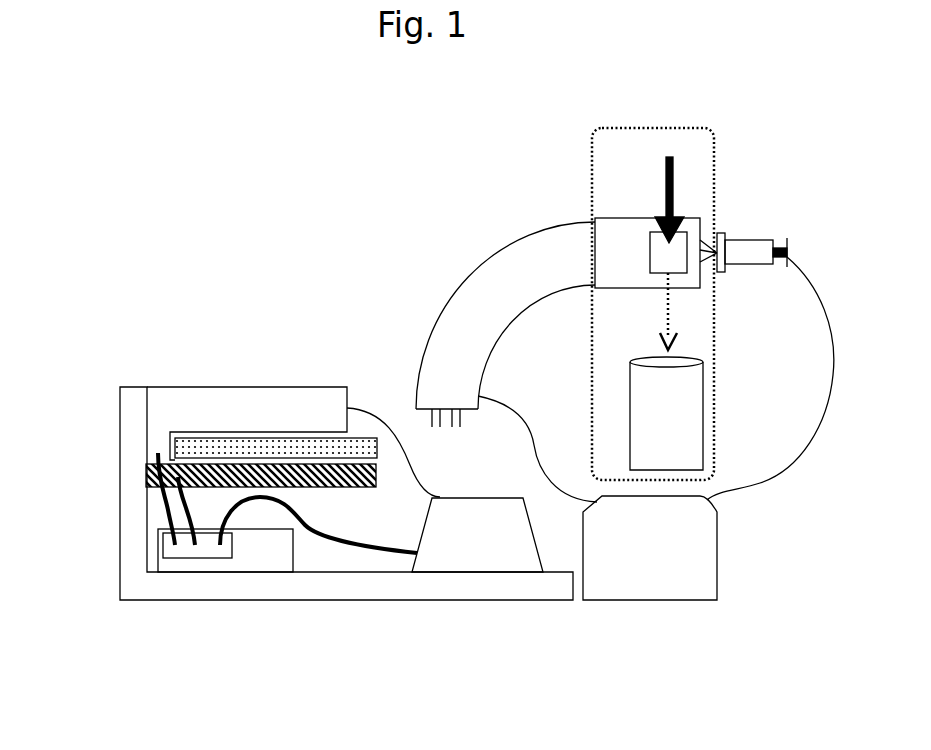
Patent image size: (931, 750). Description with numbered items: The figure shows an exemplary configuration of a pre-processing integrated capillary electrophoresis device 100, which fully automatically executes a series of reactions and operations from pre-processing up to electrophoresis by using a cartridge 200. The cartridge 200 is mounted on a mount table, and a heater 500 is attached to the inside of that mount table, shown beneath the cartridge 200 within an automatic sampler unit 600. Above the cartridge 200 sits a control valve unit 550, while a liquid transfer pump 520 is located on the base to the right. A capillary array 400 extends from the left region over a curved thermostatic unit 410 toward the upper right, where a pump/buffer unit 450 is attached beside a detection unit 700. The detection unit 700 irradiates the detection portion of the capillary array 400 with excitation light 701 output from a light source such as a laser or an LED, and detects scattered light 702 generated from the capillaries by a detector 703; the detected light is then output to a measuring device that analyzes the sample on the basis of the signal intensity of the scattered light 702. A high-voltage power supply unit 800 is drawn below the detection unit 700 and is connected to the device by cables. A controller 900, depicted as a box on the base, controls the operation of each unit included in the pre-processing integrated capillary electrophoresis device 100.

The pre-processing integrated capillary electrophoresis device 100 is at (221, 130).
The cartridge 200 is at (373, 450).
The capillary array 400 is at (447, 408).
The thermostatic unit 410 is at (505, 267).
The pump/buffer unit 450 is at (753, 242).
The heater 500 is at (298, 480).
The liquid transfer pump 520 is at (497, 508).
The control valve unit 550 is at (172, 395).
The automatic sampler unit 600 is at (125, 447).
The detection unit 700 is at (613, 128).
The excitation light 701 is at (666, 175).
The scattered light 702 is at (667, 313).
The detector 703 is at (697, 413).
The high-voltage power supply unit 800 is at (717, 563).
The controller 900 is at (255, 558).